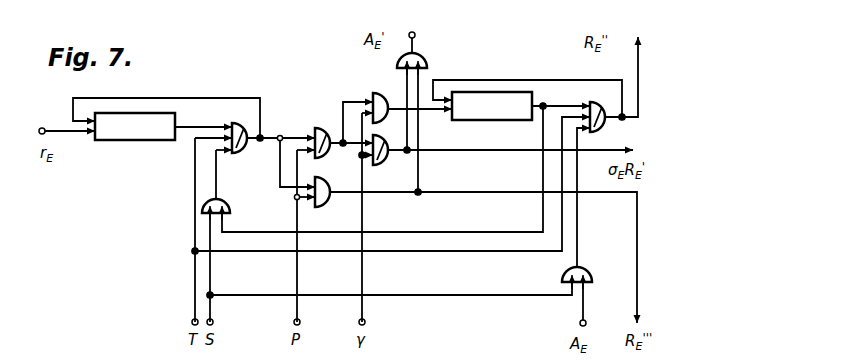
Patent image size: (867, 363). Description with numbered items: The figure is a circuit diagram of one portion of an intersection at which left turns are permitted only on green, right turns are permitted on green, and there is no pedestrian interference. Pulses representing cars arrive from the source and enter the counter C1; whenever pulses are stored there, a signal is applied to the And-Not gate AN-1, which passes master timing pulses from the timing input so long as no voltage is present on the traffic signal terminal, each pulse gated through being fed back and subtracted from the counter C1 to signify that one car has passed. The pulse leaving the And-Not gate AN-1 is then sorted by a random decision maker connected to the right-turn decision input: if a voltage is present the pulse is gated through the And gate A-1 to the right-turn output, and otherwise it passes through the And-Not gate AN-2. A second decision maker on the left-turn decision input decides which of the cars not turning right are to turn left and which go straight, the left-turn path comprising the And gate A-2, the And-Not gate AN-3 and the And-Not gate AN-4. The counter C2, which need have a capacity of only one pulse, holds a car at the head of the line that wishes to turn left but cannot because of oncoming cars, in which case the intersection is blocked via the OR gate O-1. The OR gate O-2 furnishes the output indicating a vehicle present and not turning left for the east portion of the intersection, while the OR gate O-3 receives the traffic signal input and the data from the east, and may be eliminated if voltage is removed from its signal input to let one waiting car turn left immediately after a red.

The counter C1 is at (135, 126).
The counter C2 is at (492, 106).
The And-Not gate AN-1 is at (248, 149).
The And-Not gate AN-2 is at (327, 154).
The And-Not gate AN-3 is at (380, 159).
The And-Not gate AN-4 is at (615, 125).
The And gate A-1 is at (332, 199).
The And gate A-2 is at (389, 117).
The OR gate O-1 is at (233, 212).
The OR gate O-2 is at (429, 64).
The OR gate O-3 is at (592, 284).